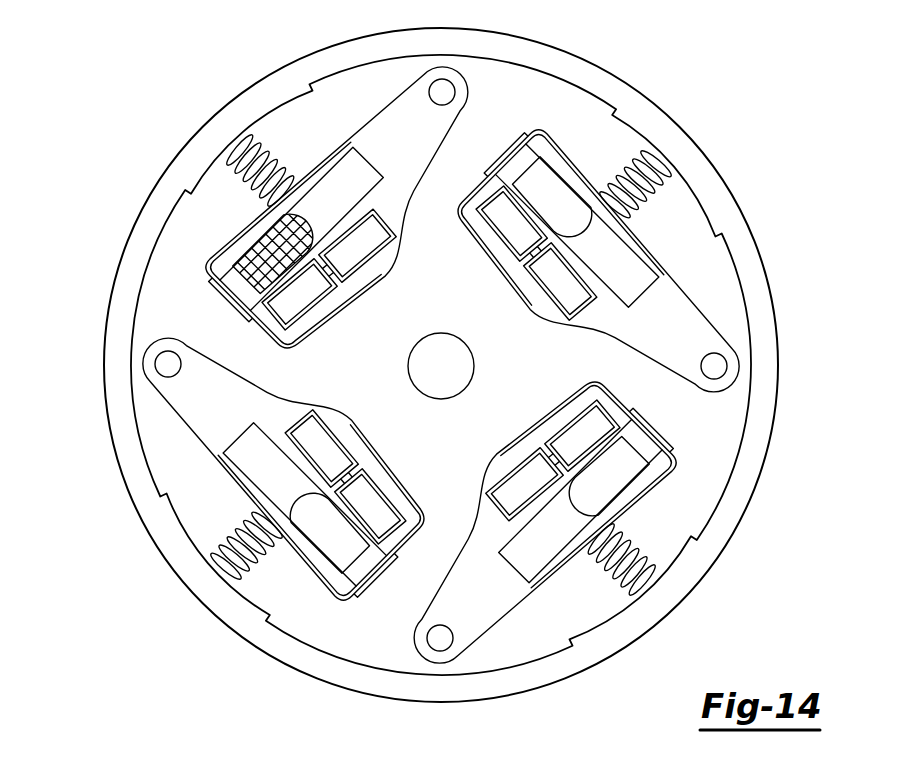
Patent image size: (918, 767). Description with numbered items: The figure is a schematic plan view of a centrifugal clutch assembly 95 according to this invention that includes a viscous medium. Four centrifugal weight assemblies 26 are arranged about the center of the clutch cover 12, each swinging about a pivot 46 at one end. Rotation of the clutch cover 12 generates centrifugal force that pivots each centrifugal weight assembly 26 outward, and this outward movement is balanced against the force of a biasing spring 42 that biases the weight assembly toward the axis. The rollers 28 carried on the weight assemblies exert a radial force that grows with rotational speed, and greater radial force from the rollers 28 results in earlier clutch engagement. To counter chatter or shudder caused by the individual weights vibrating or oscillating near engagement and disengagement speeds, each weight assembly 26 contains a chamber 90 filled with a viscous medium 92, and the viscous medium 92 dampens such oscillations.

The clutch cover 12 is at (579, 64).
The centrifugal weight assembly 26 is at (395, 88).
The rollers 28 is at (362, 250).
The biasing spring 42 is at (270, 148).
The pivot 46 is at (446, 88).
The chamber 90 is at (414, 165).
The viscous medium 92 is at (262, 252).
The centrifugal clutch assembly 95 is at (122, 635).